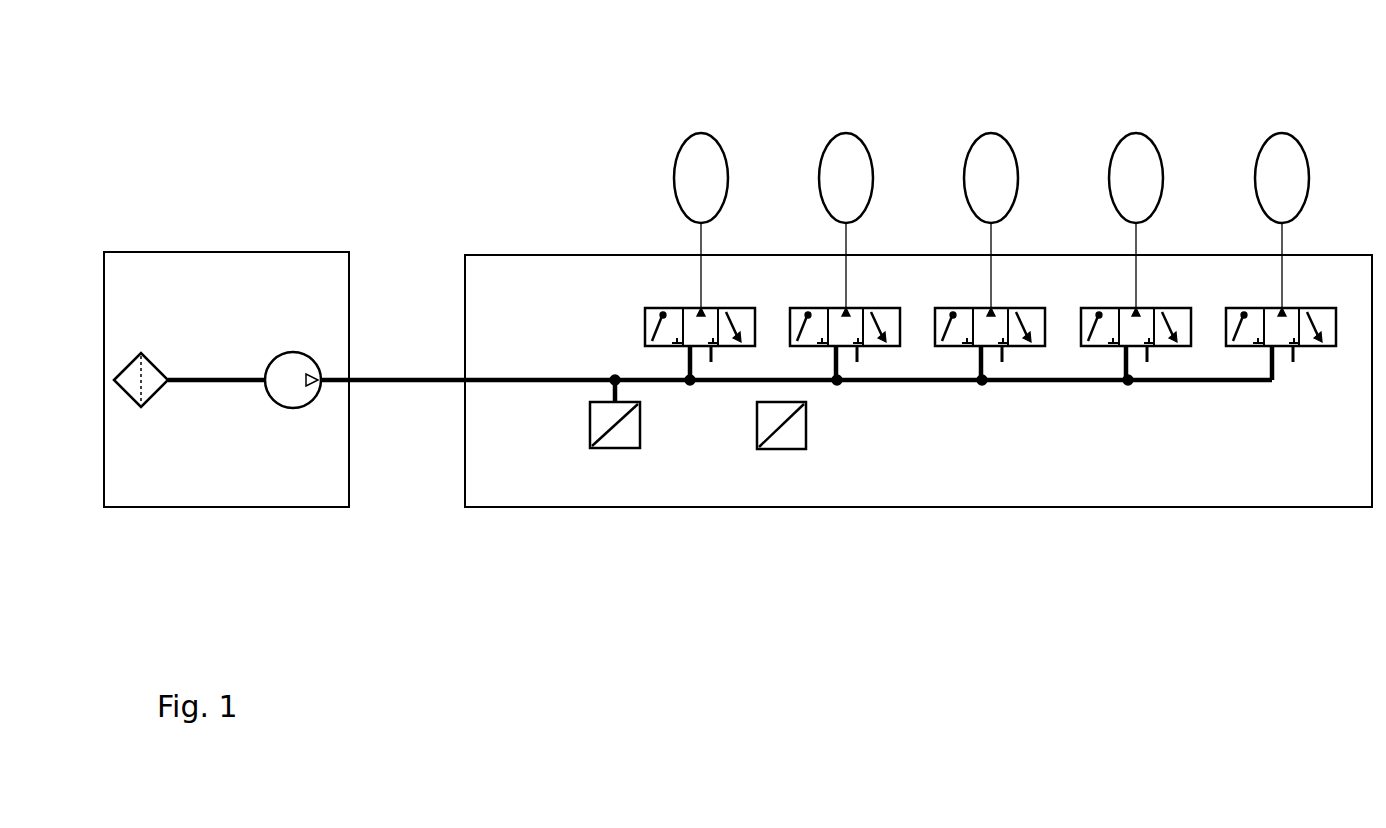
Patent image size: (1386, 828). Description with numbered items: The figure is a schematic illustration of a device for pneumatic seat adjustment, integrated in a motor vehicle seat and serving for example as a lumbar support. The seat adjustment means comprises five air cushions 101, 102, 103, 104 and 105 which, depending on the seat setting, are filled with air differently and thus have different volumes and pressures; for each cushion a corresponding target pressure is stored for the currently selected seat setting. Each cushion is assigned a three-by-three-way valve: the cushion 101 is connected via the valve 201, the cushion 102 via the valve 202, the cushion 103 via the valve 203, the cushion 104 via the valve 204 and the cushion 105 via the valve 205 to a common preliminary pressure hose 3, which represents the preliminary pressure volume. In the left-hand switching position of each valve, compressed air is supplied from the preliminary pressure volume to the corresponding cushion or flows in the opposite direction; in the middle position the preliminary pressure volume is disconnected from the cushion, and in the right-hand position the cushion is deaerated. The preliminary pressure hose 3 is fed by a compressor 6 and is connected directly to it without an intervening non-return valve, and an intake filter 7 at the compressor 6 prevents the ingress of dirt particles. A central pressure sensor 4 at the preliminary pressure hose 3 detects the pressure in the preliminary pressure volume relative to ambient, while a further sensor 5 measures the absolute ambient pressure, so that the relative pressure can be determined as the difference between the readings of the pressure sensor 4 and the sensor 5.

The preliminary pressure hose 3 is at (548, 377).
The central pressure sensor 4 is at (591, 446).
The further sensor 5 is at (807, 436).
The compressor 6 is at (290, 352).
The intake filter 7 is at (153, 360).
The air cushion 101 is at (701, 133).
The air cushion 102 is at (846, 133).
The air cushion 103 is at (991, 133).
The air cushion 104 is at (1136, 133).
The air cushion 105 is at (1282, 133).
The 3/3-way valve 201 is at (742, 309).
The 3/3-way valve 202 is at (876, 309).
The 3/3-way valve 203 is at (1032, 309).
The 3/3-way valve 204 is at (1170, 309).
The 3/3-way valve 205 is at (1314, 309).